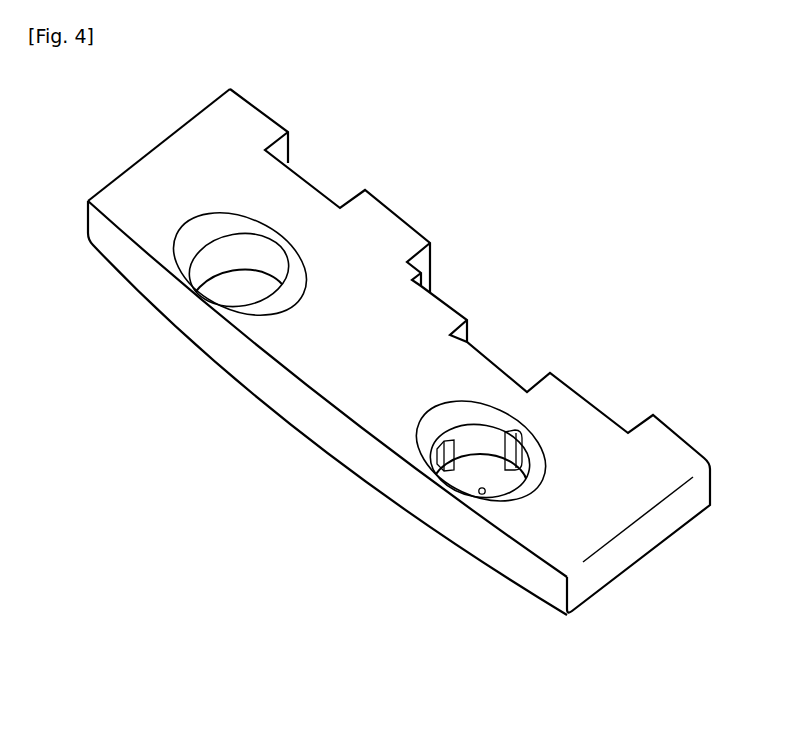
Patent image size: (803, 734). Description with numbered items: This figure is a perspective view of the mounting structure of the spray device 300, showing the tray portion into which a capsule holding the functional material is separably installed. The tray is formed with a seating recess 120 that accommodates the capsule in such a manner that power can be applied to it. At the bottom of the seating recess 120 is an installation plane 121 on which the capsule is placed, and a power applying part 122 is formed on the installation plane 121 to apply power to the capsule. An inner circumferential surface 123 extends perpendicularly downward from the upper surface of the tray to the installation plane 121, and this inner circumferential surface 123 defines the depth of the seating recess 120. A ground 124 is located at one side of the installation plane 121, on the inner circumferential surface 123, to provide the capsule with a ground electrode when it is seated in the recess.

The spray device 300 is at (482, 160).
The seating recess 120 is at (521, 676).
The installation plane 121 is at (505, 479).
The power applying part 122 is at (478, 491).
The inner circumferential surface 123 is at (478, 435).
The ground 124 is at (514, 452).